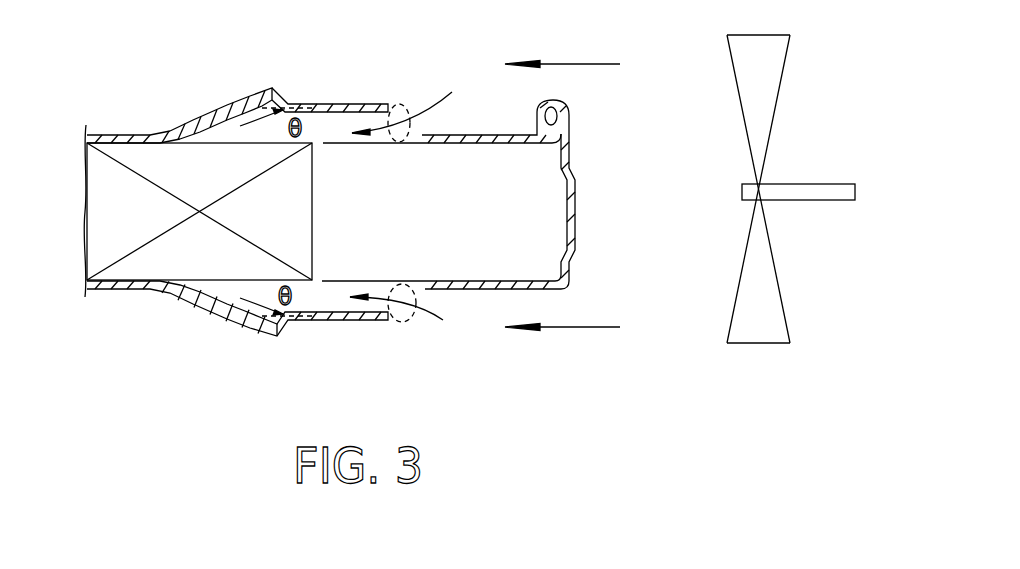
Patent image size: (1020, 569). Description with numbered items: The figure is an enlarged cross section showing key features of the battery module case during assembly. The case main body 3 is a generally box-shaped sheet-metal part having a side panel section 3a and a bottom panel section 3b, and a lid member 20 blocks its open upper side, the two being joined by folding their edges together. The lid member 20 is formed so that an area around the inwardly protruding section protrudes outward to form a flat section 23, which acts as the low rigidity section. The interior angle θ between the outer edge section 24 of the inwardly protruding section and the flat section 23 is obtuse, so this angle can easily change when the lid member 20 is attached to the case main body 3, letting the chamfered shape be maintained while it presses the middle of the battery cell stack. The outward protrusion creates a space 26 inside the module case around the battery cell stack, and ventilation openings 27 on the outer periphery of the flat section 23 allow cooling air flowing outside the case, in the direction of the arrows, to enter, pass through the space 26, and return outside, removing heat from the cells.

The case main body 3 is at (605, 264).
The side panel section 3a is at (572, 217).
The bottom panel section 3b is at (117, 289).
The lid member 20 is at (123, 132).
The flat section 23 is at (373, 105).
The outer edge section 24 is at (238, 110).
The space 26 is at (325, 130).
The ventilation openings 27 is at (410, 137).